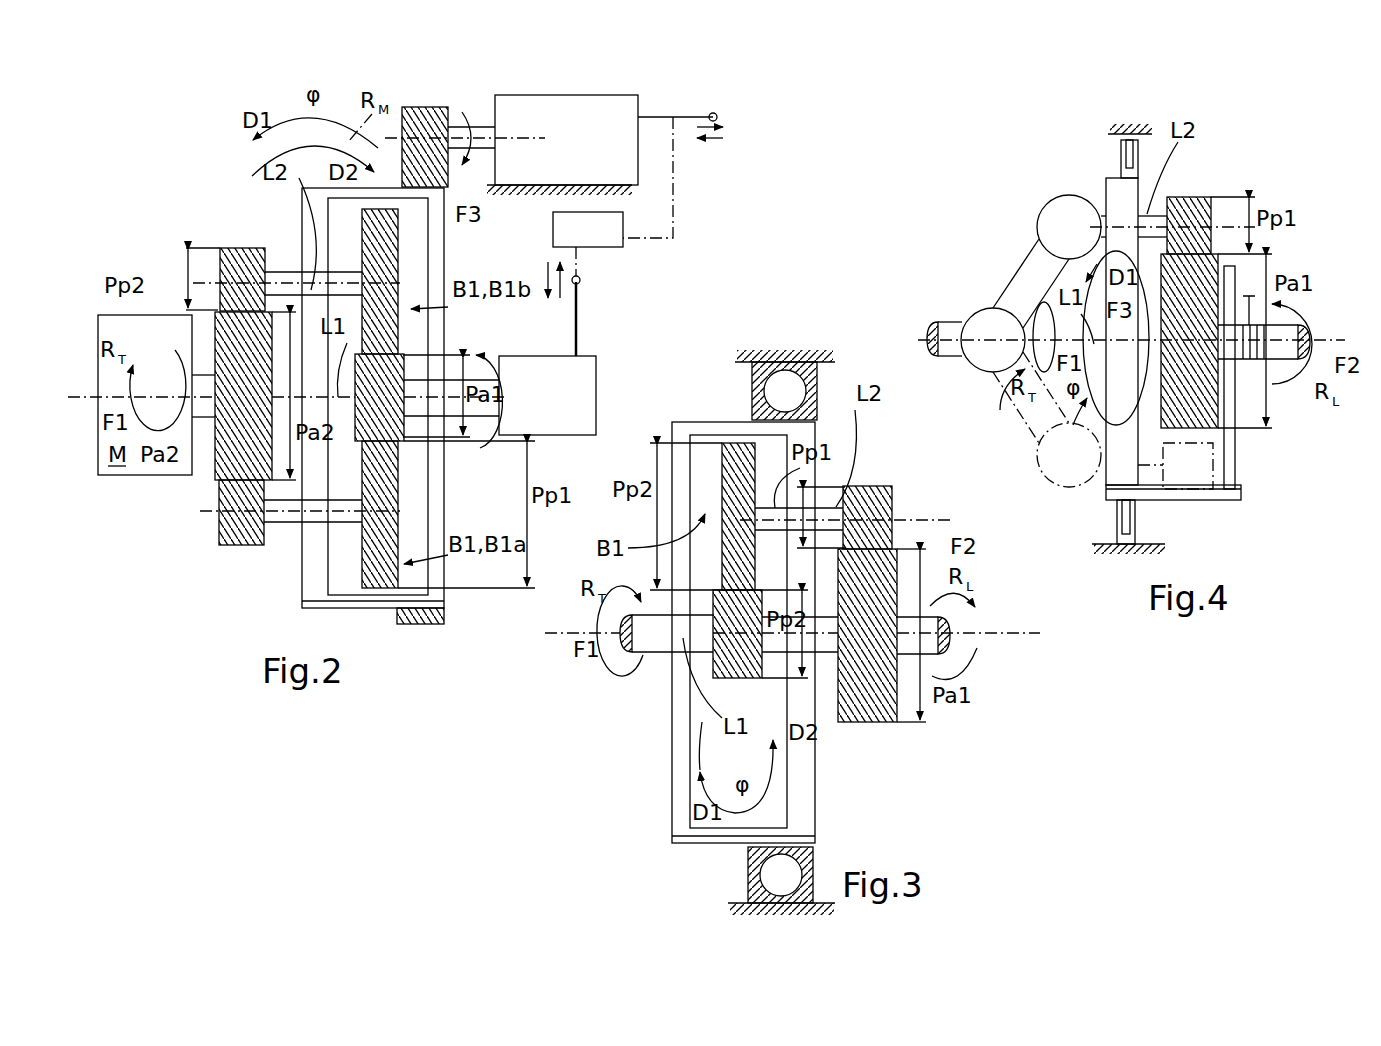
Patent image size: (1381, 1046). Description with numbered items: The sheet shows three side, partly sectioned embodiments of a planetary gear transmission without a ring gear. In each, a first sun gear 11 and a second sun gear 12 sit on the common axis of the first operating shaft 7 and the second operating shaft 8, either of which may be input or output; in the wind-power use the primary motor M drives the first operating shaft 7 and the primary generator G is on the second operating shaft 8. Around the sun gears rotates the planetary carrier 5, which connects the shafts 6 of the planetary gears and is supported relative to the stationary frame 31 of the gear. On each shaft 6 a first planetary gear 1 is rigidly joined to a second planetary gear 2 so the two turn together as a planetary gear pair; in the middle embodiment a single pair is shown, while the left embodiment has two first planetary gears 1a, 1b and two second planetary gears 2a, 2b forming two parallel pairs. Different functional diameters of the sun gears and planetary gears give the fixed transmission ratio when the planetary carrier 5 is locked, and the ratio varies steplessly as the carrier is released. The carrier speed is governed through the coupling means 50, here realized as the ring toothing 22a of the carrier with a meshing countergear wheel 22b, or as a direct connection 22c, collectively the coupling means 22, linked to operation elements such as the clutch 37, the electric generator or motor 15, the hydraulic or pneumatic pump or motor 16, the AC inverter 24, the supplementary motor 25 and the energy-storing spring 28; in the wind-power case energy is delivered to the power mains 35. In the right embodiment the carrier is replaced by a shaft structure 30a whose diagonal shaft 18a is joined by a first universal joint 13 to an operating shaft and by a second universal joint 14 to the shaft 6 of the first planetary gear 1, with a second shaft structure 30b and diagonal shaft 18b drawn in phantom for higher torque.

In FIG. 3, the first planetary gear 1 is at (868, 487).
In FIG. 4, the first planetary gear 1 is at (1188, 201).
In FIG. 2, the first planetary gear 1a is at (405, 540).
In FIG. 2, the first planetary gear 1b is at (400, 272).
In FIG. 3, the second planetary gear 2 is at (722, 512).
In FIG. 2, the second planetary gear 2a is at (217, 517).
In FIG. 2, the second planetary gear 2b is at (243, 248).
In FIG. 2, the planetary carrier 5 is at (312, 583).
In FIG. 3, the planetary carrier 5 is at (807, 802).
In FIG. 4, the planetary carrier 5 is at (1165, 495).
In FIG. 2, the shaft of the planetary gears 6 is at (284, 272).
In FIG. 3, the shaft of the planetary gears 6 is at (834, 508).
In FIG. 4, the shaft of the planetary gears 6 is at (1151, 214).
In FIG. 2, the first operating shaft 7 is at (185, 385).
In FIG. 3, the first operating shaft 7 is at (654, 655).
In FIG. 4, the first operating shaft 7 is at (948, 324).
In FIG. 2, the second operating shaft 8 is at (413, 382).
In FIG. 3, the second operating shaft 8 is at (960, 650).
In FIG. 4, the second operating shaft 8 is at (1245, 367).
In FIG. 2, the first sun gear 11 is at (406, 440).
In FIG. 3, the first sun gear 11 is at (871, 694).
In FIG. 2, the second sun gear 12 is at (213, 453).
In FIG. 3, the second sun gear 12 is at (742, 658).
In FIG. 4, the first universal joint 13 is at (1007, 354).
In FIG. 4, the second universal joint 14 is at (1083, 241).
In FIG. 2, the electric generator / combined electric motor and generator 15 is at (610, 83).
In FIG. 3, the hydraulic or pneumatic pump / combined hydraulic-pneumatic motor and pump 16 is at (745, 878).
In FIG. 4, the diagonal shaft 18a is at (1032, 273).
In FIG. 4, the diagonal shaft 18b is at (1047, 432).
In FIG. 4, the coupling means (ring toothing, countergear wheel, direct connection) 22 is at (1118, 497).
In FIG. 2, the ring toothing 22a is at (428, 104).
In FIG. 2, the countergear wheel 22b is at (414, 624).
In FIG. 3, the direct connection 22c is at (818, 422).
In FIG. 2, the AC inverter 24 is at (700, 282).
In FIG. 2, the supplementary motor 25 is at (590, 431).
In FIG. 4, the spring 28 is at (1232, 435).
In FIG. 4, the shaft structure 30a is at (1003, 233).
In FIG. 4, the second shaft structure 30b is at (1073, 499).
In FIG. 2, the frame / ground 31 is at (548, 227).
In FIG. 3, the frame / ground 31 is at (812, 342).
In FIG. 4, the frame / ground 31 is at (1146, 119).
In FIG. 2, the power mains 35 is at (578, 327).
In FIG. 2, the clutch 37 is at (562, 145).
In FIG. 4, the clutch 37 is at (1110, 165).
In FIG. 2, the coupling means 50 is at (455, 103).
In FIG. 3, the coupling means 50 is at (748, 416).
In FIG. 4, the coupling means 50 is at (1098, 177).